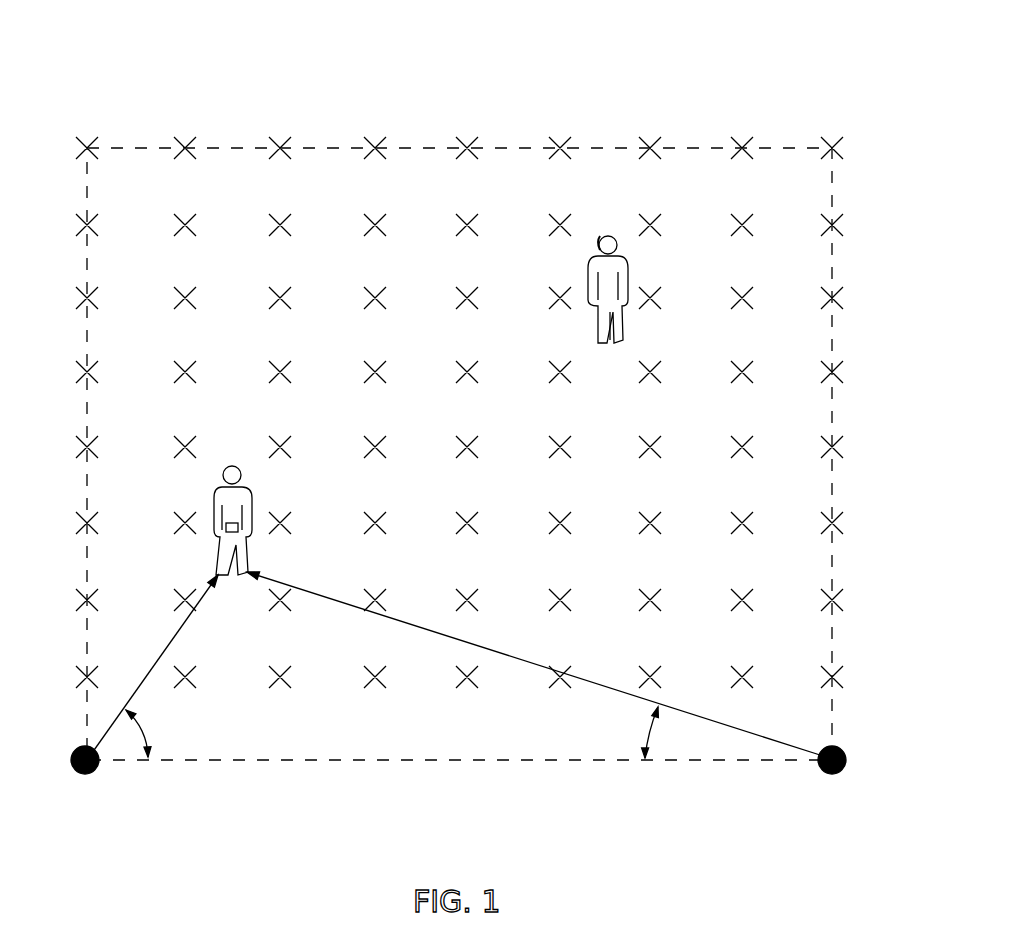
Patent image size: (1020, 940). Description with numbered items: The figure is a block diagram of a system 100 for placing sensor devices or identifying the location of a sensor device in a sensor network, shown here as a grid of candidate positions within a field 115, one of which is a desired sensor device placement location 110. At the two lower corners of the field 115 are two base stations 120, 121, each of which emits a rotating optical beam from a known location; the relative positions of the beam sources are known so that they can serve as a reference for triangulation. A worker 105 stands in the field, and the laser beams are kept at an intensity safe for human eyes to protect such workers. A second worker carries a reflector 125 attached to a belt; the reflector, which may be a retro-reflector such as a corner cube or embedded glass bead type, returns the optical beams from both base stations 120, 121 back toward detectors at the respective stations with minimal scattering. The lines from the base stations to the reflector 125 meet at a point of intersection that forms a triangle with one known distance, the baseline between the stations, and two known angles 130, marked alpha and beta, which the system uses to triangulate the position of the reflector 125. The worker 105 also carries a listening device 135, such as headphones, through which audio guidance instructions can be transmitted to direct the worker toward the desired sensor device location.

The system 100 is at (459, 384).
The worker 105 is at (661, 304).
The desired sensor device placement location 110 is at (282, 147).
The field 115 is at (593, 147).
The base station 120 is at (88, 773).
The base station 121 is at (843, 772).
The reflector 125 is at (240, 580).
The known angles 130 is at (160, 733).
The listening device 135 is at (611, 240).